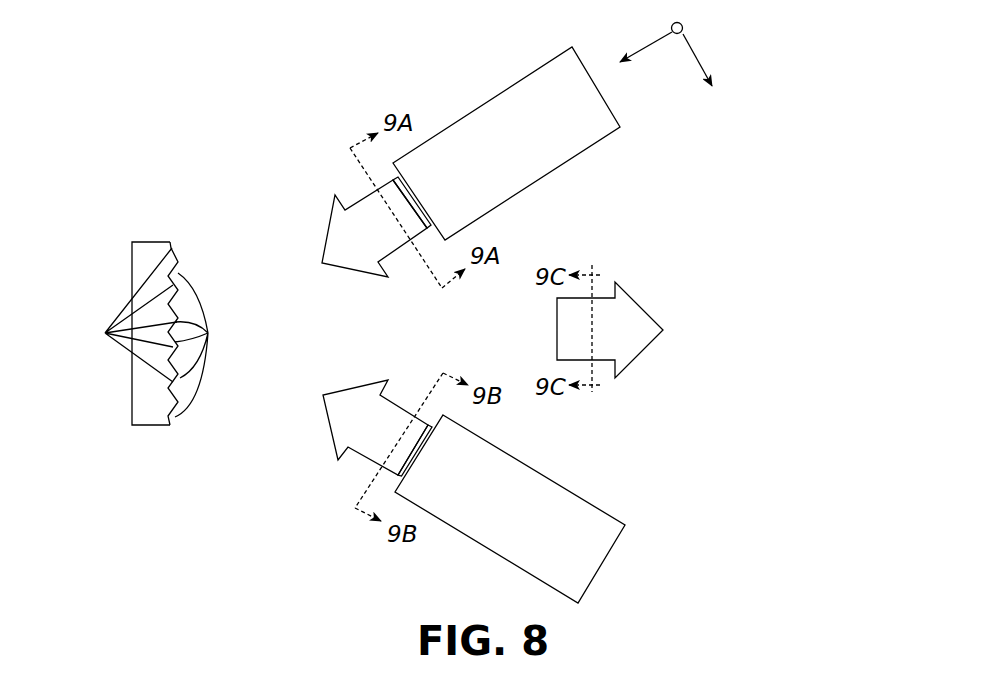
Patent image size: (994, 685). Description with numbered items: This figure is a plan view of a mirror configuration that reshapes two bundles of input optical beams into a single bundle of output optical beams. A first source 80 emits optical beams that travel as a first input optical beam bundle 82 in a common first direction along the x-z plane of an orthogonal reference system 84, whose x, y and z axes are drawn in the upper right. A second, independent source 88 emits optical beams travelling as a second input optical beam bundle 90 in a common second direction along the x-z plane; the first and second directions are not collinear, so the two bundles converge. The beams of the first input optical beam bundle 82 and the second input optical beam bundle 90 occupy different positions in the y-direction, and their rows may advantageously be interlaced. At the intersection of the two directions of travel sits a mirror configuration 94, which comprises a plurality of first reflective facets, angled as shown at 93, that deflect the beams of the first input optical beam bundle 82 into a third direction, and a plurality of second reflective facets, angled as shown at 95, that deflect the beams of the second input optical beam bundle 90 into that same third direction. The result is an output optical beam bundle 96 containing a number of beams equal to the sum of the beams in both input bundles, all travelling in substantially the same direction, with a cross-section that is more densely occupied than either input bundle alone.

The first source 80 is at (514, 156).
The first input optical beam bundle 82 is at (338, 240).
The orthogonal reference system 84 is at (727, 19).
The second source 88 is at (526, 523).
The second input optical beam bundle 90 is at (340, 410).
The first reflective facets 93 is at (127, 315).
The mirror configuration 94 is at (103, 251).
The second reflective facets 95 is at (209, 345).
The output optical beam bundle 96 is at (632, 318).